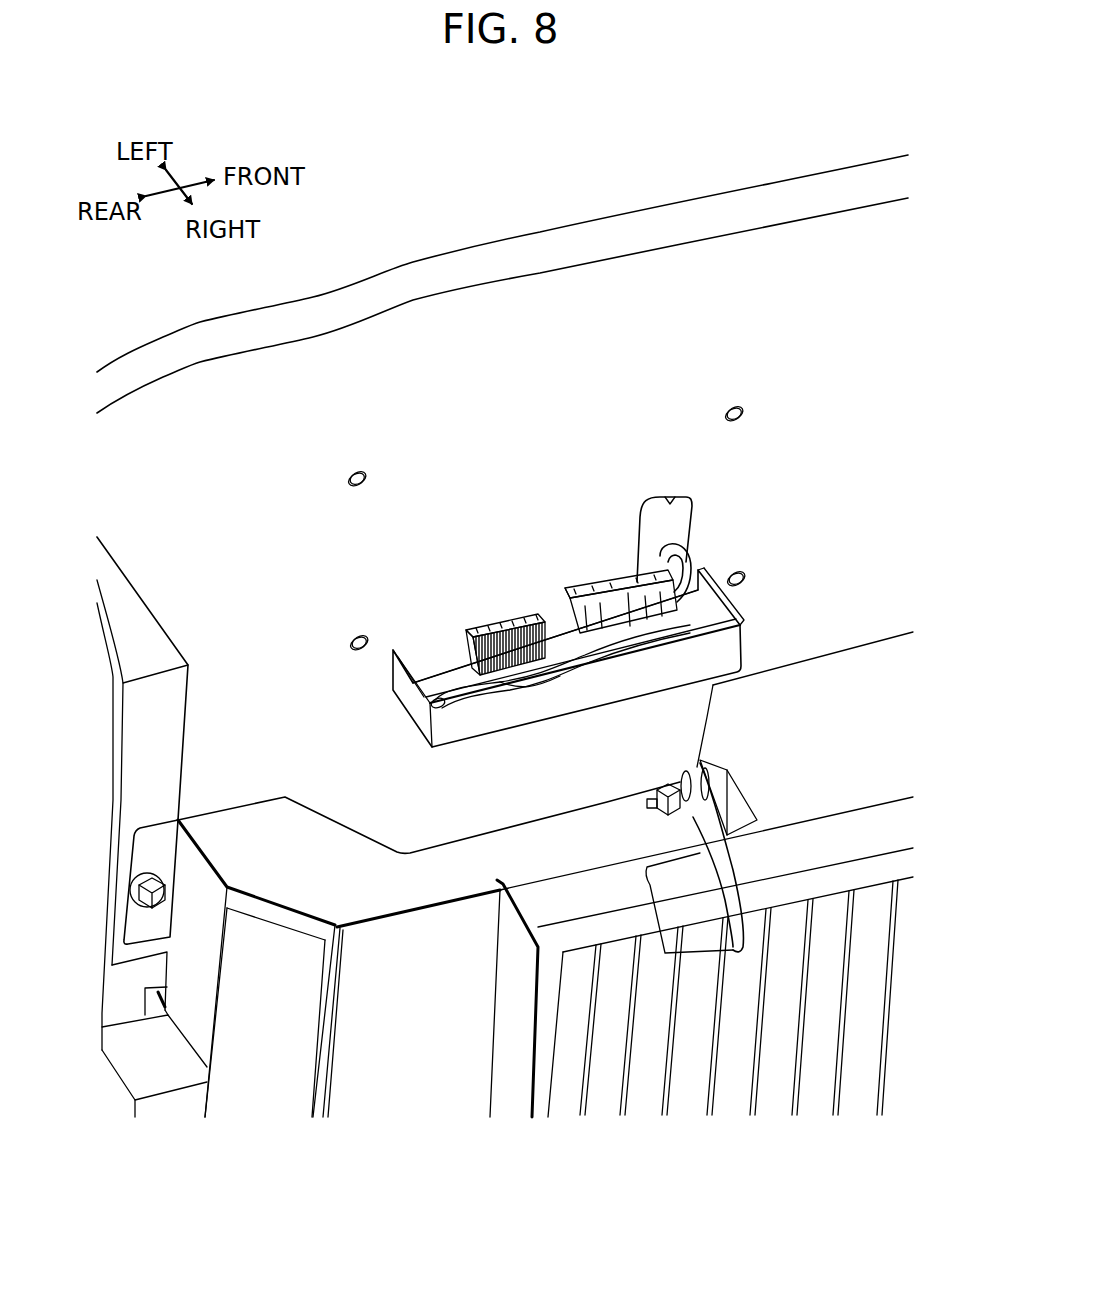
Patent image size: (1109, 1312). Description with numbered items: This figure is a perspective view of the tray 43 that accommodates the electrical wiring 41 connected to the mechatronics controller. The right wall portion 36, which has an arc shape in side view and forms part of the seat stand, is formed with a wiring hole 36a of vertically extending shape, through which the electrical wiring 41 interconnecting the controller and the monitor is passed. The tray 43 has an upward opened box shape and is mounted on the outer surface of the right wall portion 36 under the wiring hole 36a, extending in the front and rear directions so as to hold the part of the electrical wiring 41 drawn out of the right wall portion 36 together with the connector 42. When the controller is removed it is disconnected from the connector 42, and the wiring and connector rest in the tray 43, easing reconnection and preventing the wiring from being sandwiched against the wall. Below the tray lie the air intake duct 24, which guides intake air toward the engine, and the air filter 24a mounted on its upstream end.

The air intake duct 24 is at (408, 1110).
The air filter 24a is at (690, 1103).
The right wall portion 36 is at (445, 263).
The wiring hole 36a is at (670, 500).
The electrical wiring 41 is at (447, 675).
The connector 42 is at (508, 620).
The tray 43 is at (566, 705).